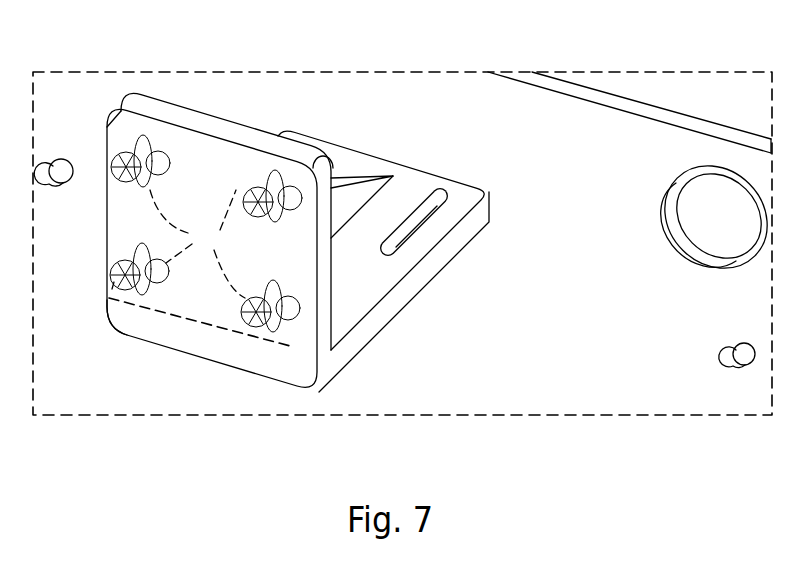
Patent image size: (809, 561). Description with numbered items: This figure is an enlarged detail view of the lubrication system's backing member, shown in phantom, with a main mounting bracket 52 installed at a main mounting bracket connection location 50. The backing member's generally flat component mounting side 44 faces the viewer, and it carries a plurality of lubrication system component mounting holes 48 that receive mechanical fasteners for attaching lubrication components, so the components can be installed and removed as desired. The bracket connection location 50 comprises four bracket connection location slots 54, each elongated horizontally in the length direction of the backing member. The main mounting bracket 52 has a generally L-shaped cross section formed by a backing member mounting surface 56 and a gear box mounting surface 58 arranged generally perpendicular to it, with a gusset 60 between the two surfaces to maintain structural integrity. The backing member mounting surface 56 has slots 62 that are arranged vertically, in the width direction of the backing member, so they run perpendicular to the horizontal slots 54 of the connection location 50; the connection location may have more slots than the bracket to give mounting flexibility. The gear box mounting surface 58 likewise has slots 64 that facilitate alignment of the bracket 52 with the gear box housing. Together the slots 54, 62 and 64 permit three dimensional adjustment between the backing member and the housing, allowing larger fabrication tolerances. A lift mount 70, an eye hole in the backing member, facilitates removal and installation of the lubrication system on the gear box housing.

The component mounting side 44 is at (477, 409).
The lubrication system component mounting holes 48 is at (45, 158).
The main mounting bracket connection location 50 is at (196, 328).
The main mounting bracket 52 is at (207, 127).
The bracket connection location slot 54 is at (197, 244).
The backing member mounting surface 56 is at (295, 350).
The gear box mounting surface 58 is at (470, 226).
The gusset 60 is at (364, 170).
The bracket backing member mounting surface slot 62 is at (123, 155).
The gear box mounting surface slots 64 is at (449, 195).
The lift mount 70 is at (688, 176).